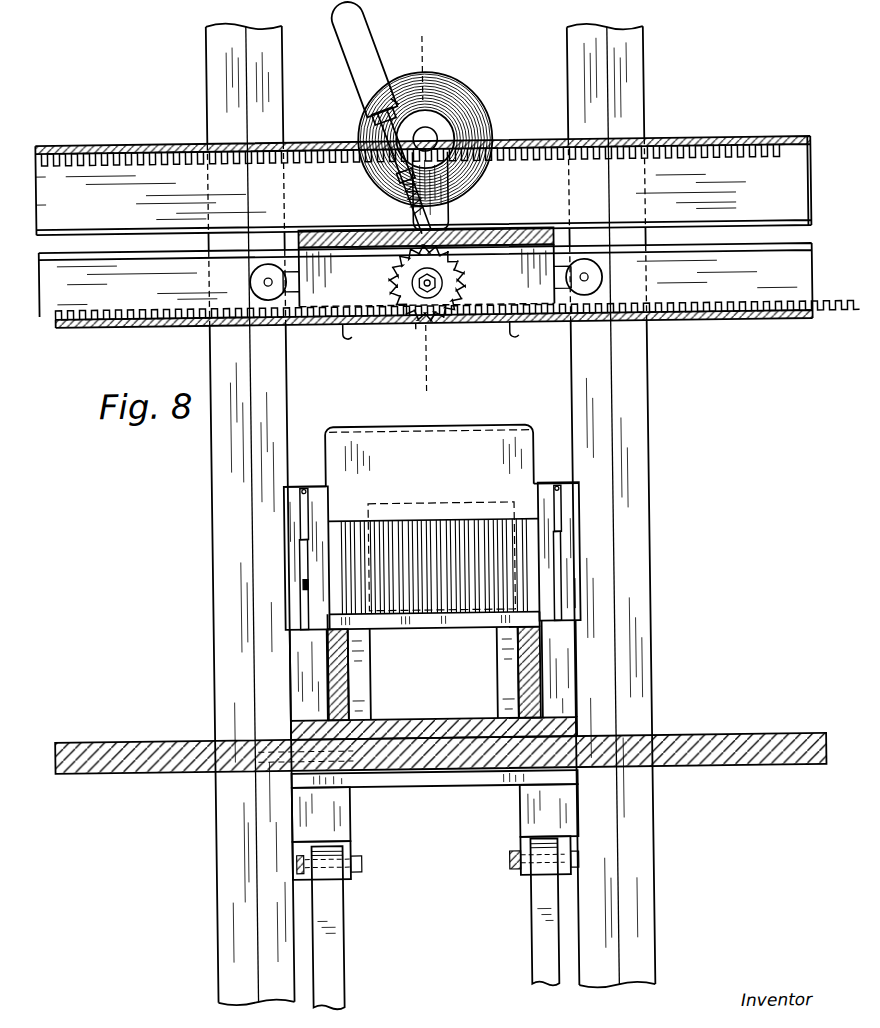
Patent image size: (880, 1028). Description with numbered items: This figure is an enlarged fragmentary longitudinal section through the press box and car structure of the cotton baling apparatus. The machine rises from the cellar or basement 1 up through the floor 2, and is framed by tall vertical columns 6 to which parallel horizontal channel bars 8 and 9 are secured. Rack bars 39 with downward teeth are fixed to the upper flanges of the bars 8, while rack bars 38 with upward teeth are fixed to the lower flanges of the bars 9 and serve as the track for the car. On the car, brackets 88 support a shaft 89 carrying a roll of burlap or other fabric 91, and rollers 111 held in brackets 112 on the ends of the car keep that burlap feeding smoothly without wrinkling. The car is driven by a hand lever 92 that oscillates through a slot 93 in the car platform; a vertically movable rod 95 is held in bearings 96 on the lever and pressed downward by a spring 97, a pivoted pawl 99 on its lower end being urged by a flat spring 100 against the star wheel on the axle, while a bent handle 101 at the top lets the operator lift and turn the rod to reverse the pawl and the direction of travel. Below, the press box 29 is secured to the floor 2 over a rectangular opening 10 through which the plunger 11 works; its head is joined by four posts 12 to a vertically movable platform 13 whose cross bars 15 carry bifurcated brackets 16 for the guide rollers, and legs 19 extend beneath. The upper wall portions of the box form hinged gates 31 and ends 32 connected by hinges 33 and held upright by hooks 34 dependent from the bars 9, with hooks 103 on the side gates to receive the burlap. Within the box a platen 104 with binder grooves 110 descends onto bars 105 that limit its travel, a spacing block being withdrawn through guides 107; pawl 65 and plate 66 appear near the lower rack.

The cellar or basement 1 is at (700, 838).
The floor 2 is at (742, 740).
The vertical columns 6 is at (212, 422).
The horizontal channel bars 8 is at (423, 185).
The horizontal channel bars 9 is at (426, 285).
The rectangular openings 10 is at (193, 733).
The plunger 11 is at (413, 502).
The posts 12 is at (370, 712).
The vertically movable platform 13 is at (430, 786).
The cross bars 15 is at (306, 818).
The bifurcated brackets 16 is at (300, 873).
The legs 19 is at (338, 952).
The press box 29 is at (545, 588).
The hinged gates 31 is at (299, 556).
The ends 32 is at (444, 578).
The hinges 33 is at (300, 521).
The hooks 34 is at (350, 340).
The rack bars 38 is at (752, 318).
The rack bars 39 is at (685, 152).
The pawl 65 is at (418, 327).
The plate 66 is at (392, 298).
The brackets 88 is at (450, 126).
The shaft 89 is at (442, 140).
The roll of burlap or other fabric 91 is at (455, 110).
The hand lever 92 is at (345, 54).
The slot 93 is at (358, 216).
The vertically movable rod 95 is at (383, 146).
The bearings 96 is at (380, 120).
The spring 97 is at (400, 198).
The pivoted pawl 99 is at (446, 214).
The flat spring 100 is at (310, 282).
The handle 101 is at (402, 102).
The hooks 103 is at (302, 592).
The platen 104 is at (493, 440).
The bars 105 is at (334, 648).
The guides 107 is at (352, 706).
The grooves 110 is at (362, 431).
The rollers 111 is at (264, 302).
The brackets 112 is at (290, 296).